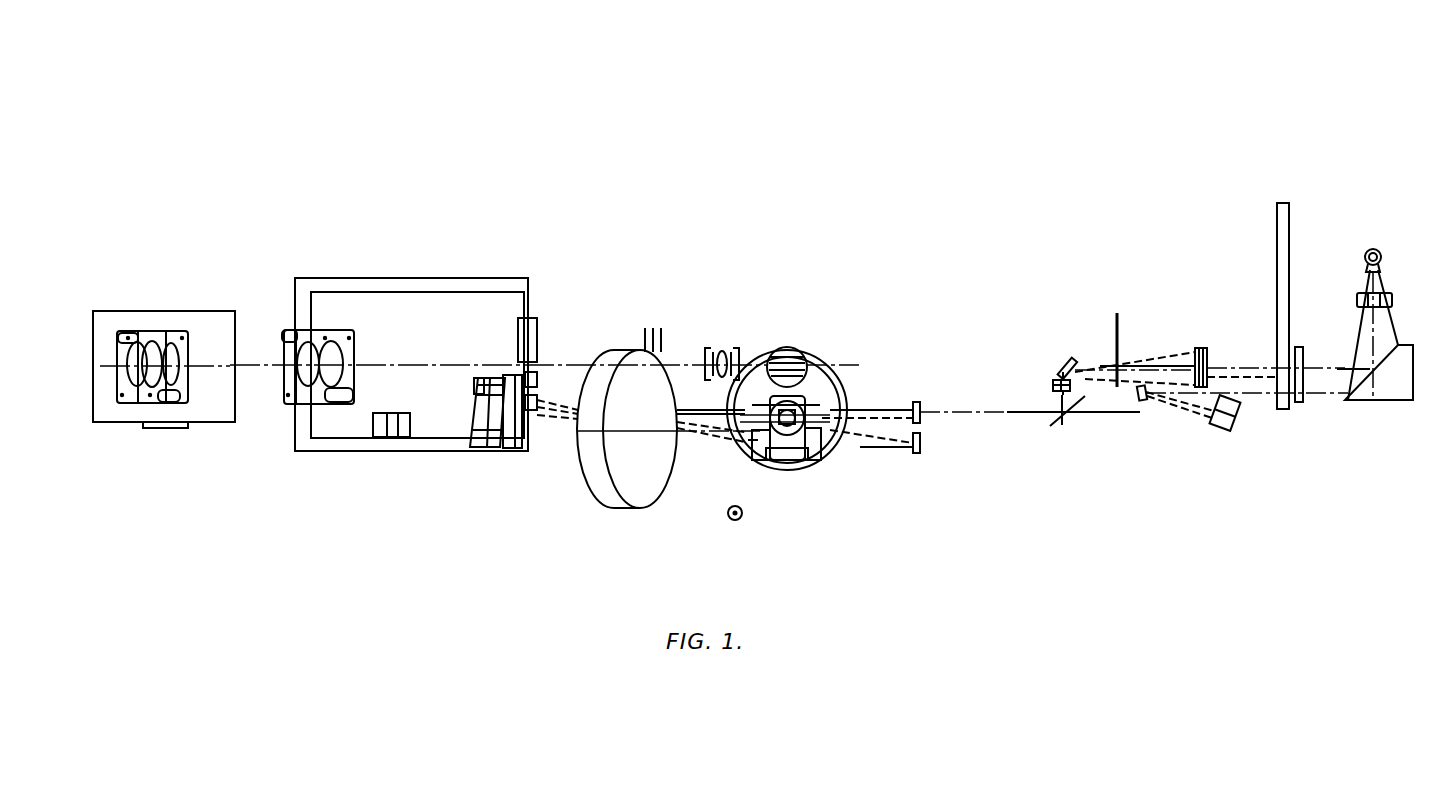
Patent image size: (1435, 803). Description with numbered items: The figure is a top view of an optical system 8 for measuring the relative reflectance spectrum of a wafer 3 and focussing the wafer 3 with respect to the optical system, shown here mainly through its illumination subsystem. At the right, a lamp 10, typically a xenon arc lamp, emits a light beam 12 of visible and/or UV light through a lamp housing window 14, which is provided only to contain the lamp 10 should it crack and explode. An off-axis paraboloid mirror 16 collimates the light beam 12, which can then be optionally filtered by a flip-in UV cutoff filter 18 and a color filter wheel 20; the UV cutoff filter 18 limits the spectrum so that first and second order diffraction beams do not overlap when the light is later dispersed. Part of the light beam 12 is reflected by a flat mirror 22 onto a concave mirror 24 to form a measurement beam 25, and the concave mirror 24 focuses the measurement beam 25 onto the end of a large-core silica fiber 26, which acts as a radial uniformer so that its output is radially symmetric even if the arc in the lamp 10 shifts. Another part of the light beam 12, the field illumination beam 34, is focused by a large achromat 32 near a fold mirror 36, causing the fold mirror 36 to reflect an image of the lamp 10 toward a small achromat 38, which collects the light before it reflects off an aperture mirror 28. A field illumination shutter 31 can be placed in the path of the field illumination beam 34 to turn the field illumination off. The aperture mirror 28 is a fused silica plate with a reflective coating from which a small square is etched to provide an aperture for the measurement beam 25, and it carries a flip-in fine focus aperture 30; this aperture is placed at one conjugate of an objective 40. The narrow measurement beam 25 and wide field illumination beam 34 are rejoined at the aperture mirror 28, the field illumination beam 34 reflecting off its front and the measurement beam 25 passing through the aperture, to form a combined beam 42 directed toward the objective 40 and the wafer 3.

The optical system 8 is at (173, 82).
The objective 40 is at (817, 392).
The wafer 3 is at (818, 462).
The combined beam 42 is at (963, 418).
The aperture mirror 28 is at (1057, 408).
The flip-in fine focus aperture 30 is at (1055, 428).
The small achromat 38 is at (1052, 384).
The fold mirror 36 is at (1062, 356).
The field illumination beam 34 is at (1152, 355).
The field illumination shutter 31 is at (1117, 313).
The large achromat 32 is at (1197, 347).
The flat mirror 22 is at (1143, 402).
The measurement beam 25 is at (1188, 413).
The concave mirror 24 is at (1236, 425).
The large-core silica fiber 26 is at (1105, 413).
The color filter wheel 20 is at (1283, 203).
The flip-in UV cutoff filter 18 is at (1300, 403).
The off-axis paraboloid mirror 16 is at (1395, 402).
The light beam 12 is at (1395, 331).
The lamp housing window 14 is at (1357, 300).
The lamp 10 is at (1383, 255).